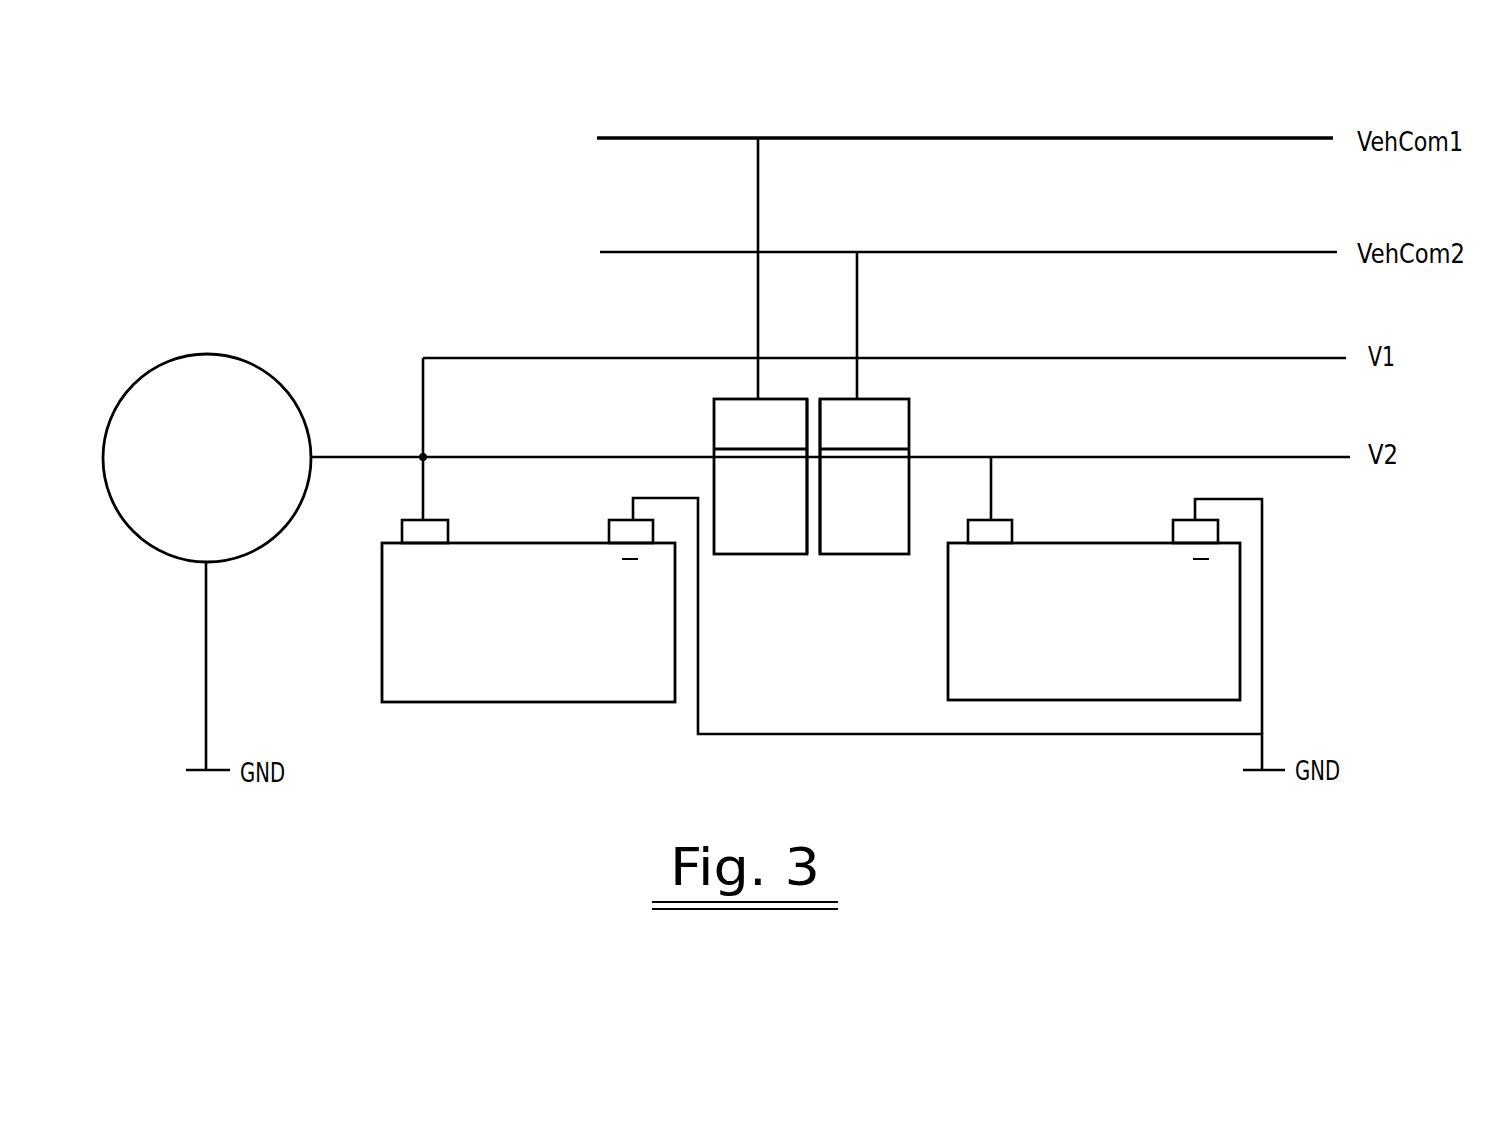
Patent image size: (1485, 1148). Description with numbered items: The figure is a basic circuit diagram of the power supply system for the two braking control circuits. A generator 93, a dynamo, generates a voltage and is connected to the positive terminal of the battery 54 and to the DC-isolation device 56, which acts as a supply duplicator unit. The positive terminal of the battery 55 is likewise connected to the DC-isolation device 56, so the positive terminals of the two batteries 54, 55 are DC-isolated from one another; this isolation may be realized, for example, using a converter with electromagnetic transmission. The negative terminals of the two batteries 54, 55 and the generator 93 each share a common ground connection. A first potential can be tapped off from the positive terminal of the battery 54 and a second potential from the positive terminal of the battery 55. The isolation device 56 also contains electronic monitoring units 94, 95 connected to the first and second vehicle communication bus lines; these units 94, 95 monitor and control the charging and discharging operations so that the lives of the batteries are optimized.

The generator 93 is at (205, 373).
The electronic monitoring unit 94 is at (723, 423).
The electronic monitoring unit 95 is at (893, 423).
The DC-isolation device 56 is at (813, 543).
The battery 54 is at (505, 680).
The battery 55 is at (963, 652).